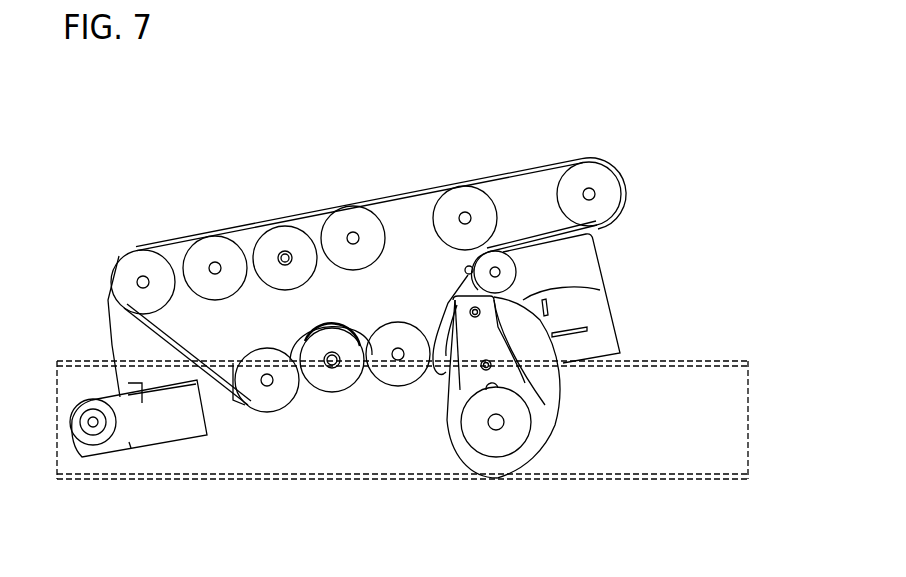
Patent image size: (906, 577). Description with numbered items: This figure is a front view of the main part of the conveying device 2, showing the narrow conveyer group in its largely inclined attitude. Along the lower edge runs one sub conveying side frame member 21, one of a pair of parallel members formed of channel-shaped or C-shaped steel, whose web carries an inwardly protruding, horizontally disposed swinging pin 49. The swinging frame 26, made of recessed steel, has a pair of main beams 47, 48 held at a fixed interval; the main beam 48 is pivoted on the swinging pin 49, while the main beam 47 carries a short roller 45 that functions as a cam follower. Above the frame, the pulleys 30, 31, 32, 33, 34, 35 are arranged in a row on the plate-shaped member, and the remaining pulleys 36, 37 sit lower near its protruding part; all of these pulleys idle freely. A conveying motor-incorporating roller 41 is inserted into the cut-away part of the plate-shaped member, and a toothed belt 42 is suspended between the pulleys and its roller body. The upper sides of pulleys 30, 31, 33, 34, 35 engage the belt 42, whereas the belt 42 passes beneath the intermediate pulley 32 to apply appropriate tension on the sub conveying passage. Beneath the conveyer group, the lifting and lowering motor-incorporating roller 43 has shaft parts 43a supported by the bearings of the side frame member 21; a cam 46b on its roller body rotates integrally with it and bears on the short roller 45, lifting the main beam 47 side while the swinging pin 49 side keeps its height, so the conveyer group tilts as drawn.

The conveying device 2 is at (642, 110).
The sub conveying side frame member 21 is at (705, 460).
The swinging frame 26 is at (401, 388).
The pulley 30 is at (153, 258).
The pulley 31 is at (215, 243).
The pulley 32 is at (285, 235).
The pulley 33 is at (355, 215).
The pulley 34 is at (462, 197).
The pulley 35 is at (603, 165).
The pulley 36 is at (272, 405).
The pulley 37 is at (403, 377).
The conveying motor-incorporating roller 41 is at (338, 385).
The belt 42 is at (523, 172).
The lifting and lowering motor-incorporating roller 43 is at (503, 418).
The shaft part 43a is at (497, 430).
The short roller 45 is at (505, 272).
The cam 46b is at (567, 282).
The main beam 47 is at (600, 309).
The main beam 48 is at (163, 437).
The swinging pin 49 is at (92, 428).